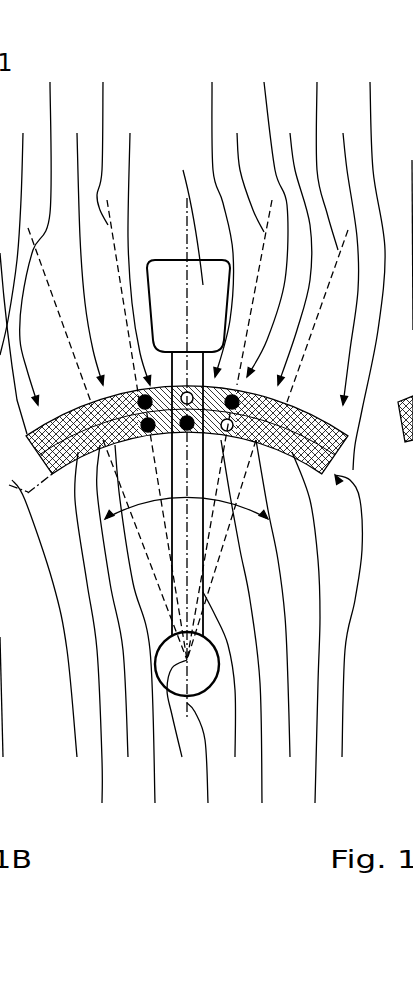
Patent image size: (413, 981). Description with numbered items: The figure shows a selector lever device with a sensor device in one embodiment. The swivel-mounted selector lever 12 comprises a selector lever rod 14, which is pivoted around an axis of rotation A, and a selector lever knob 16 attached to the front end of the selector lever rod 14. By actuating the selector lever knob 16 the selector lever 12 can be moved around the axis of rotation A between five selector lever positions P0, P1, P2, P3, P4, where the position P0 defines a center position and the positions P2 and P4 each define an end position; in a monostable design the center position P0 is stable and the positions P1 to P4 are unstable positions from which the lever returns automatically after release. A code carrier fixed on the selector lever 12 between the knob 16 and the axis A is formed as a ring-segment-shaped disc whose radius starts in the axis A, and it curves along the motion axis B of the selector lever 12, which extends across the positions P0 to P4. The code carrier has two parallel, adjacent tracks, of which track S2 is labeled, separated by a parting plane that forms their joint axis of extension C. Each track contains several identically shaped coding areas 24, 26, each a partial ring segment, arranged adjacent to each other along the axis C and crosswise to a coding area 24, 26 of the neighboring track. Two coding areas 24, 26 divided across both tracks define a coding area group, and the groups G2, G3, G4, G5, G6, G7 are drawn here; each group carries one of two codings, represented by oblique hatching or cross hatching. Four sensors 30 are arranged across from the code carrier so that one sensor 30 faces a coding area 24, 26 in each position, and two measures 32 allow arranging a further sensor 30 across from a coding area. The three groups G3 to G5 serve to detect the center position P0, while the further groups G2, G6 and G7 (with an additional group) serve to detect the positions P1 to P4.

The selector lever 12 is at (171, 250).
The selector lever rod 14 is at (227, 692).
The selector lever knob 16 is at (187, 198).
The coding area 24 is at (179, 252).
The coding area 26 is at (202, 644).
The sensor 30 is at (133, 640).
The measure for arranging another sensor 32 is at (151, 616).
The track S2 is at (345, 633).
The axis of rotation A is at (179, 726).
The motion axis B is at (245, 638).
The joint axis of extension C is at (47, 636).
The selector lever position P0 is at (204, 769).
The selector lever position P1 is at (247, 242).
The selector lever position P2 is at (317, 225).
The selector lever position P3 is at (114, 227).
The selector lever position P4 is at (56, 227).
The coding area group G2 is at (83, 242).
The coding area group G3 is at (133, 242).
The coding area group G4 is at (214, 213).
The coding area group G5 is at (267, 213).
The coding area group G6 is at (293, 242).
The coding area group G7 is at (369, 259).